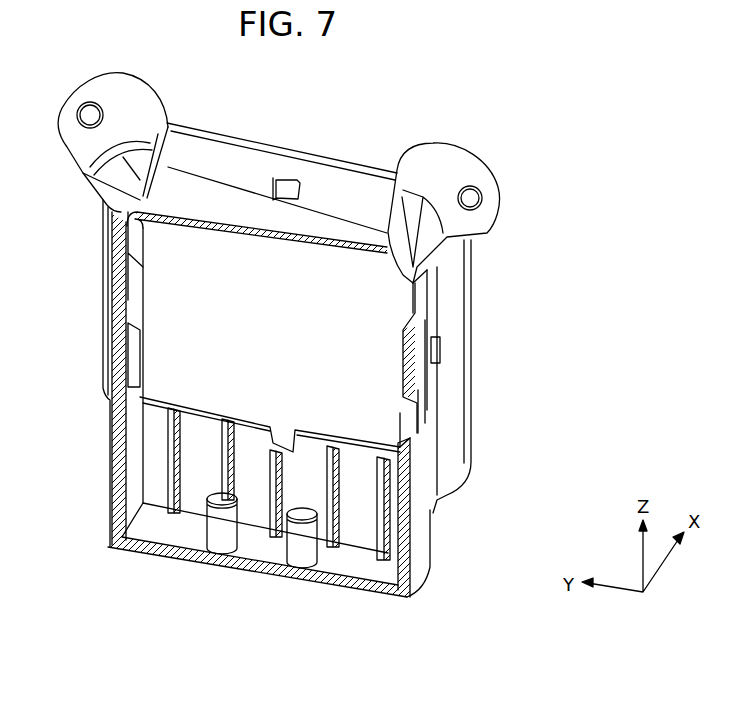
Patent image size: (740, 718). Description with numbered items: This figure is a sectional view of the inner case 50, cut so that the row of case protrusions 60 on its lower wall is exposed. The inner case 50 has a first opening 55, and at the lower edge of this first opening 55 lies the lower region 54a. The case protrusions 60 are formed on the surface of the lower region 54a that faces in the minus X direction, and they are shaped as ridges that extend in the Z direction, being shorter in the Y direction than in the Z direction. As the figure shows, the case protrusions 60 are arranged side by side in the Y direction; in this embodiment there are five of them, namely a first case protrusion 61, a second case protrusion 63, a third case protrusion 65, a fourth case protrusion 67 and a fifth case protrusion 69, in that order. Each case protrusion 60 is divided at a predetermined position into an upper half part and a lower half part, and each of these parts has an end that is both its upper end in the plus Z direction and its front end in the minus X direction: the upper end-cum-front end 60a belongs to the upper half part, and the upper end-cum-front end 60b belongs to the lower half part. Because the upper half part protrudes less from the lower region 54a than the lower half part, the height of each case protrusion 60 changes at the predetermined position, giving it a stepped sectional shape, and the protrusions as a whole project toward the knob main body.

The inner case 50 is at (306, 382).
The first opening 55 is at (143, 338).
The upper end-cum-front end 60a is at (173, 421).
The upper end-cum-front end 60b is at (173, 453).
The lower region 54a is at (357, 467).
The first case protrusion 61 is at (162, 495).
The second case protrusion 63 is at (222, 470).
The third case protrusion 65 is at (260, 507).
The fourth case protrusion 67 is at (333, 513).
The fifth case protrusion 69 is at (367, 520).
The case protrusions 60 is at (380, 640).